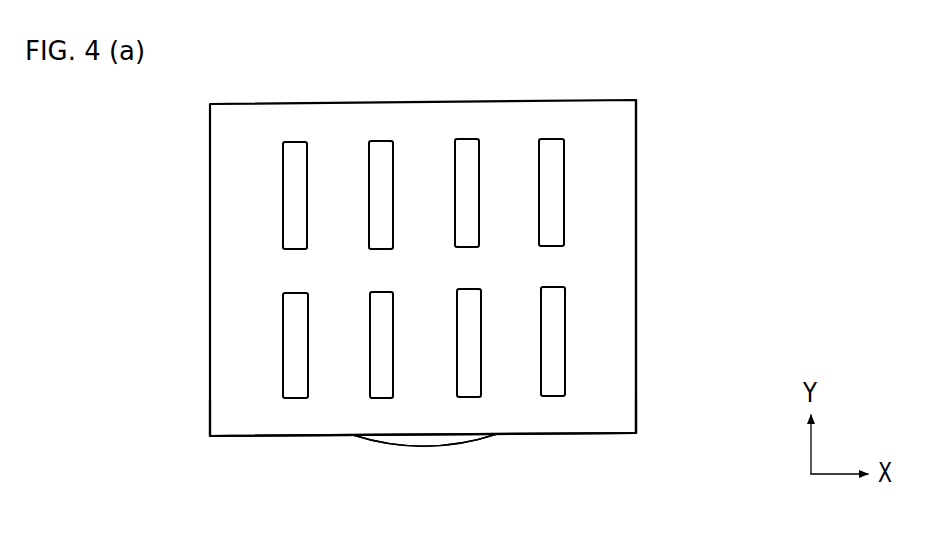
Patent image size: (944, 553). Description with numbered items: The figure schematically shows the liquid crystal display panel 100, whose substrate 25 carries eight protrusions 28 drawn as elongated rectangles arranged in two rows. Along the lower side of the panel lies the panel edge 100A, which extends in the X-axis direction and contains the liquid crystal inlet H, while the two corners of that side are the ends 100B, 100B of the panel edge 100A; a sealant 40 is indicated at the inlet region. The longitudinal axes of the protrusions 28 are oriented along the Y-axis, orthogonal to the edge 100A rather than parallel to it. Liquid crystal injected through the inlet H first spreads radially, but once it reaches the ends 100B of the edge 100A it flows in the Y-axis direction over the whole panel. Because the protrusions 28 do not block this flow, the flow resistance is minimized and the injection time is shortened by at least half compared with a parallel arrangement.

The liquid crystal display panel 100 is at (662, 103).
The substrate 25 is at (636, 190).
The protrusions 28 is at (549, 139).
The sealant 40 is at (378, 445).
The liquid crystal inlet H is at (448, 445).
The panel edge having the liquid crystal inlet 100A is at (563, 434).
The ends of the panel edge 100B is at (209, 441).